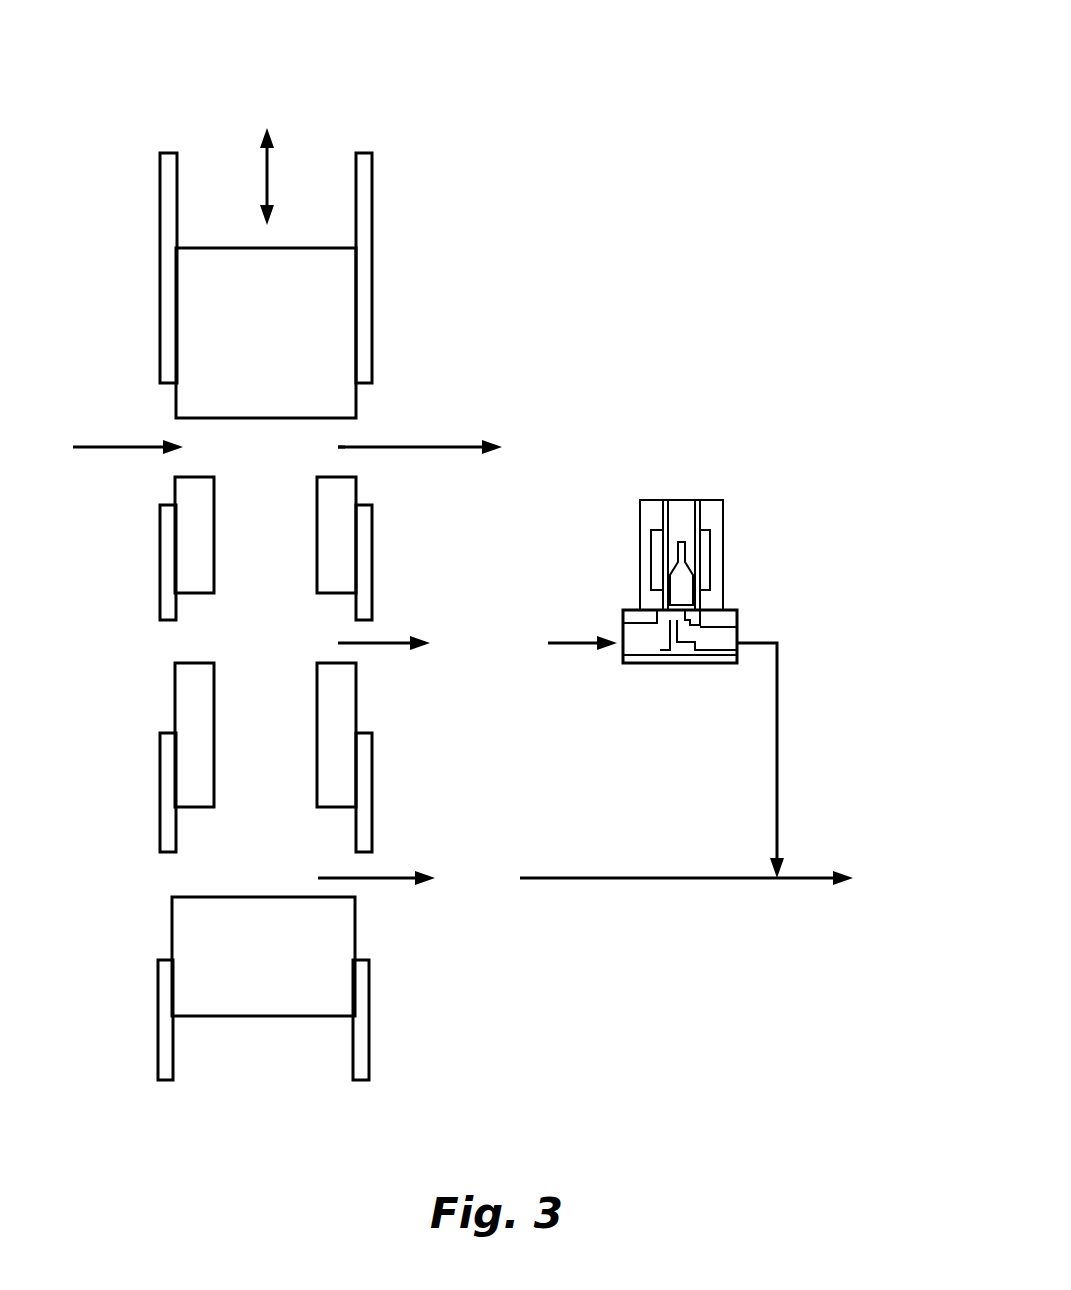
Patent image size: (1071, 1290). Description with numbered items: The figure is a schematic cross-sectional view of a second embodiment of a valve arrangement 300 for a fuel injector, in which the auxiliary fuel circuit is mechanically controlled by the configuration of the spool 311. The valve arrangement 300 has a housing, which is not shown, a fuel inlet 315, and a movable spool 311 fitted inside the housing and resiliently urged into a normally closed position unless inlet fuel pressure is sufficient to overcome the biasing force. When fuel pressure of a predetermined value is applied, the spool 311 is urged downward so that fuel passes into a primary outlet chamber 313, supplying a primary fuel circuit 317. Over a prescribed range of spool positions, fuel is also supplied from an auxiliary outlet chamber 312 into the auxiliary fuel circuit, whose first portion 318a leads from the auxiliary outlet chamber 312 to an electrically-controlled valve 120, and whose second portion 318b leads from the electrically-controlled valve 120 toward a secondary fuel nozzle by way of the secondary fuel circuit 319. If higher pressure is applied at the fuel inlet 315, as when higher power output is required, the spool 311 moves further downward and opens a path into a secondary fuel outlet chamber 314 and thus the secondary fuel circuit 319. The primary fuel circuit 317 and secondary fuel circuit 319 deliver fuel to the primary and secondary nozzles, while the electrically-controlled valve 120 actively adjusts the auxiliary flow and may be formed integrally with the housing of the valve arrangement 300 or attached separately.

The valve arrangement 300 is at (117, 170).
The spool 311 is at (266, 273).
The auxiliary outlet chamber 312 is at (366, 632).
The primary outlet chamber 313 is at (348, 430).
The secondary fuel outlet chamber 314 is at (361, 867).
The fuel inlet 315 is at (105, 447).
The primary fuel circuit 317 is at (443, 447).
The first portion of auxiliary fuel circuit 318a is at (572, 643).
The second portion of auxiliary fuel circuit 318b is at (779, 742).
The secondary fuel circuit 319 is at (580, 878).
The electrically-controlled valve 120 is at (742, 512).